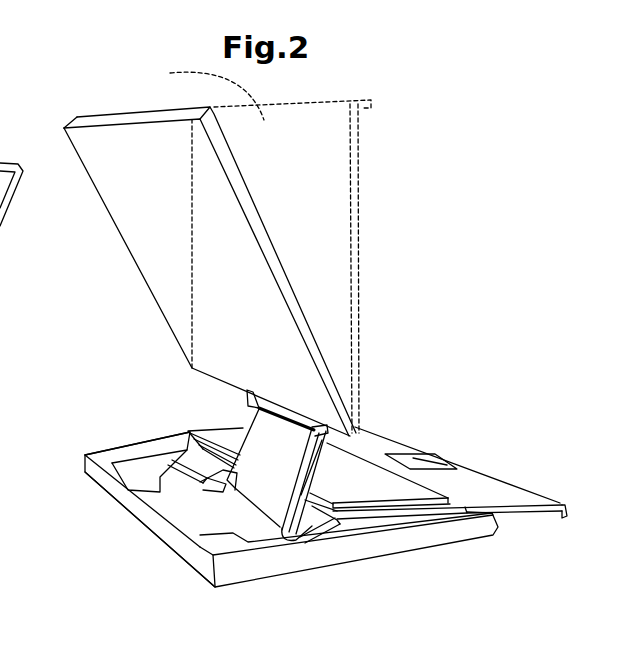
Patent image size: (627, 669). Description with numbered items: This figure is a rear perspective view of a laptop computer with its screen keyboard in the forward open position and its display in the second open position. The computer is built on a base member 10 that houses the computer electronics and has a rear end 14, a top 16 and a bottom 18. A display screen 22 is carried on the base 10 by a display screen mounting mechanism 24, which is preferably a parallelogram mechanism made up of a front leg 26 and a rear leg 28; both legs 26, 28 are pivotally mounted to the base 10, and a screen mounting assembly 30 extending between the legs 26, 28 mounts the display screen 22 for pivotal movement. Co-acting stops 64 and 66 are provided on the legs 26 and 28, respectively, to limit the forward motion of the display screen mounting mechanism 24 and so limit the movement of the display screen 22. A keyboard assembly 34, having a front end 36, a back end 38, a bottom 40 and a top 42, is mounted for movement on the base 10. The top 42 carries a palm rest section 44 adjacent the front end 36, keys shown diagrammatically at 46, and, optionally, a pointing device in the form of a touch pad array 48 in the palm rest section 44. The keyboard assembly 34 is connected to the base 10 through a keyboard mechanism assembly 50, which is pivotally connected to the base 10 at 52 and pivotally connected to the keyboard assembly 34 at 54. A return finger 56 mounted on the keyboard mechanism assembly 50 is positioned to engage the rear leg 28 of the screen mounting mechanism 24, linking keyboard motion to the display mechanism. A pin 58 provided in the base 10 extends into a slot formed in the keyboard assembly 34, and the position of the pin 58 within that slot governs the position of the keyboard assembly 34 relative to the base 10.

The base member 10 is at (278, 562).
The rear end 14 is at (203, 563).
The top 16 is at (88, 477).
The bottom 18 is at (248, 583).
The display screen 22 is at (128, 135).
The display screen mounting mechanism 24 is at (203, 487).
The front leg 26 is at (373, 420).
The rear leg 28 is at (274, 524).
The screen mounting assembly 30 is at (247, 395).
The keyboard assembly 34 is at (513, 490).
The front end 36 is at (503, 494).
The back end 38 is at (343, 522).
The bottom 40 is at (528, 510).
The top 42 is at (367, 473).
The palm rest section 44 is at (482, 485).
The keys 46 is at (377, 452).
The touch pad array 48 is at (413, 465).
The keyboard mechanism assembly 50 is at (172, 432).
The pivotal connection to base 52 is at (200, 482).
The pivotal connection to keyboard assembly 54 is at (330, 517).
The return finger 56 is at (243, 487).
The pin 58 is at (466, 514).
The stop 64 is at (313, 477).
The stop 66 is at (313, 458).